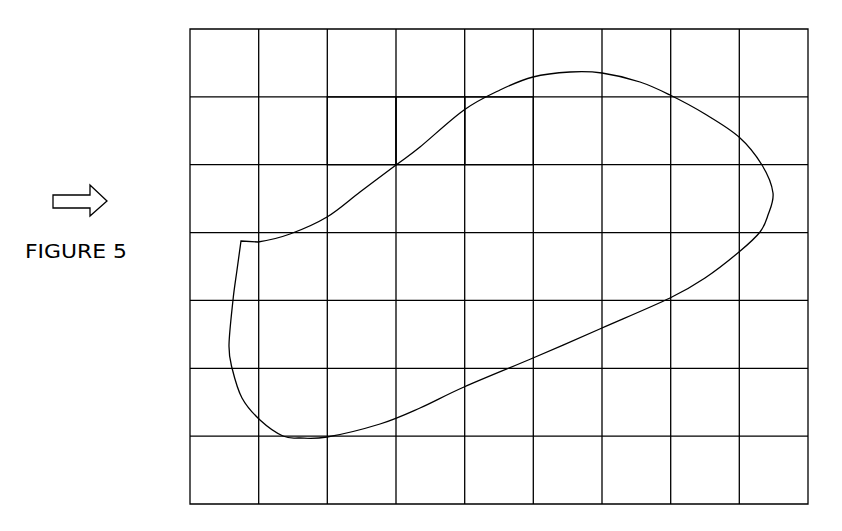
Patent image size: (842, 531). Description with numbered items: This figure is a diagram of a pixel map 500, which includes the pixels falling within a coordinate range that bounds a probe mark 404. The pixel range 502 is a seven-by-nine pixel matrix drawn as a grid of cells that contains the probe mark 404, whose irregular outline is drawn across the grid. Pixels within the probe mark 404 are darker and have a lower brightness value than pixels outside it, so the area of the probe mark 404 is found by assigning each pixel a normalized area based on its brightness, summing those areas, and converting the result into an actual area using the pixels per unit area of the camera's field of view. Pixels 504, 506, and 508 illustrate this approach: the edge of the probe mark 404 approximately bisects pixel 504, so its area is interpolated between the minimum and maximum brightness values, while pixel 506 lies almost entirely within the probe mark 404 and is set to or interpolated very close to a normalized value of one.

The pixel map 500 is at (80, 186).
The pixel range 502 is at (713, 462).
The pixel 504 is at (361, 131).
The pixel 506 is at (430, 131).
The pixel 508 is at (499, 131).
The probe mark 404 is at (481, 307).